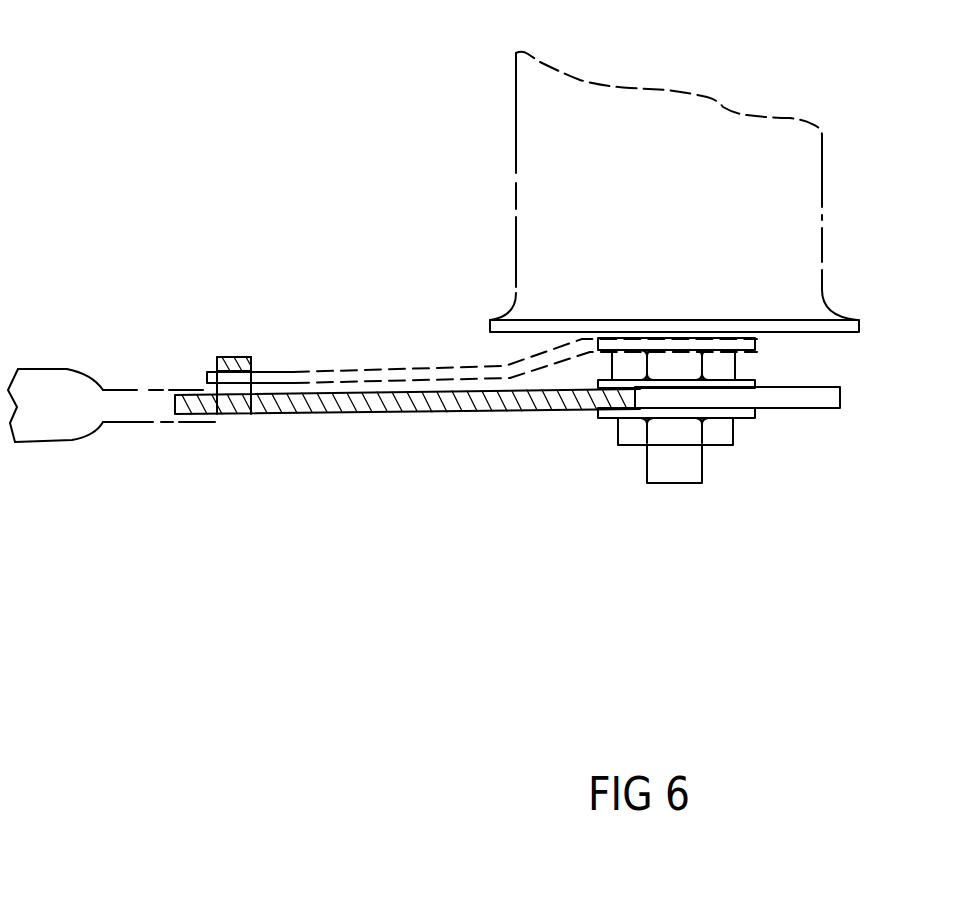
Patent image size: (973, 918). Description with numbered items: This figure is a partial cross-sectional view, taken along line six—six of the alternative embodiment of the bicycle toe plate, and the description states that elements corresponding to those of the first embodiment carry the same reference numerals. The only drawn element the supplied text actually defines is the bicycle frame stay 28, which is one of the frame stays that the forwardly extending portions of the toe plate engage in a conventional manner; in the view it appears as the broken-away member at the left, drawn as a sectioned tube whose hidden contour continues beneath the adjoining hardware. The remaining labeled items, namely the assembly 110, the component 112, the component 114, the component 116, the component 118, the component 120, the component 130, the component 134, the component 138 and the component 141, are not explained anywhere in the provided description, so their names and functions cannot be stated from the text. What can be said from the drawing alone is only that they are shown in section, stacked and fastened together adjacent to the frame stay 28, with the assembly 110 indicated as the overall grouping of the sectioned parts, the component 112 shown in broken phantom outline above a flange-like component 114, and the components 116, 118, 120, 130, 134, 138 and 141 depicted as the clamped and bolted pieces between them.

The bicycle frame stay 28 is at (55, 443).
The mounting assembly 110 is at (460, 431).
The housing 112 is at (824, 192).
The flange 114 is at (817, 331).
The bolt 116 is at (683, 483).
The bracket 118 is at (358, 368).
The mounting plate 120 is at (503, 403).
The spacer plate 130 is at (730, 398).
The bolt head 134 is at (233, 357).
The clamp bolt 138 is at (240, 390).
The clamp 141 is at (295, 383).